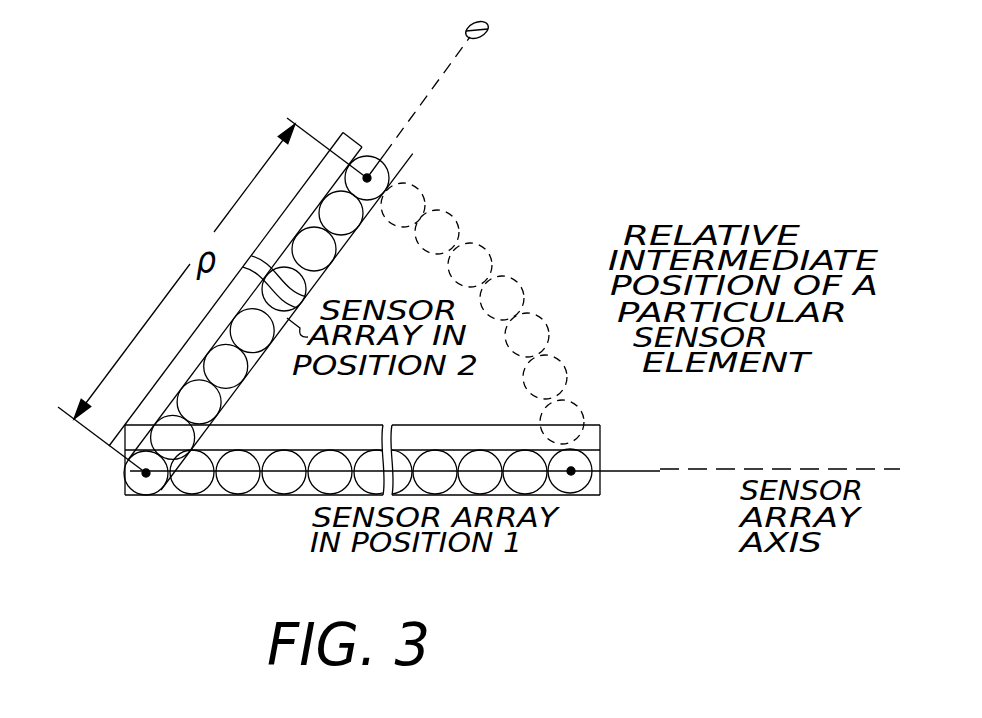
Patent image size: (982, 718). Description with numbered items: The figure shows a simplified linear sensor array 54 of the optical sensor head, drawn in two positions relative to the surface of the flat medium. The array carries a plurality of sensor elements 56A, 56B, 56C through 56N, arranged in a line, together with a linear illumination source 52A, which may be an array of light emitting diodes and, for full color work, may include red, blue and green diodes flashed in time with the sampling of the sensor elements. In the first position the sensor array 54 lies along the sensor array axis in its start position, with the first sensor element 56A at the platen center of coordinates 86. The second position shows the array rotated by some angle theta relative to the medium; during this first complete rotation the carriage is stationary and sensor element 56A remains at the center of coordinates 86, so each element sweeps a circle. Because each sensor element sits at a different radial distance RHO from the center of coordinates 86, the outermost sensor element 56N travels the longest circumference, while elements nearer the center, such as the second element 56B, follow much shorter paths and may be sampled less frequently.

The illumination source 52A is at (303, 183).
The sensor array 54 is at (200, 372).
The sensor element 56A is at (138, 472).
The sensor element 56B is at (197, 482).
The sensor element 56C is at (245, 483).
The sensor element 56N is at (576, 468).
The center of coordinates 86 is at (152, 496).